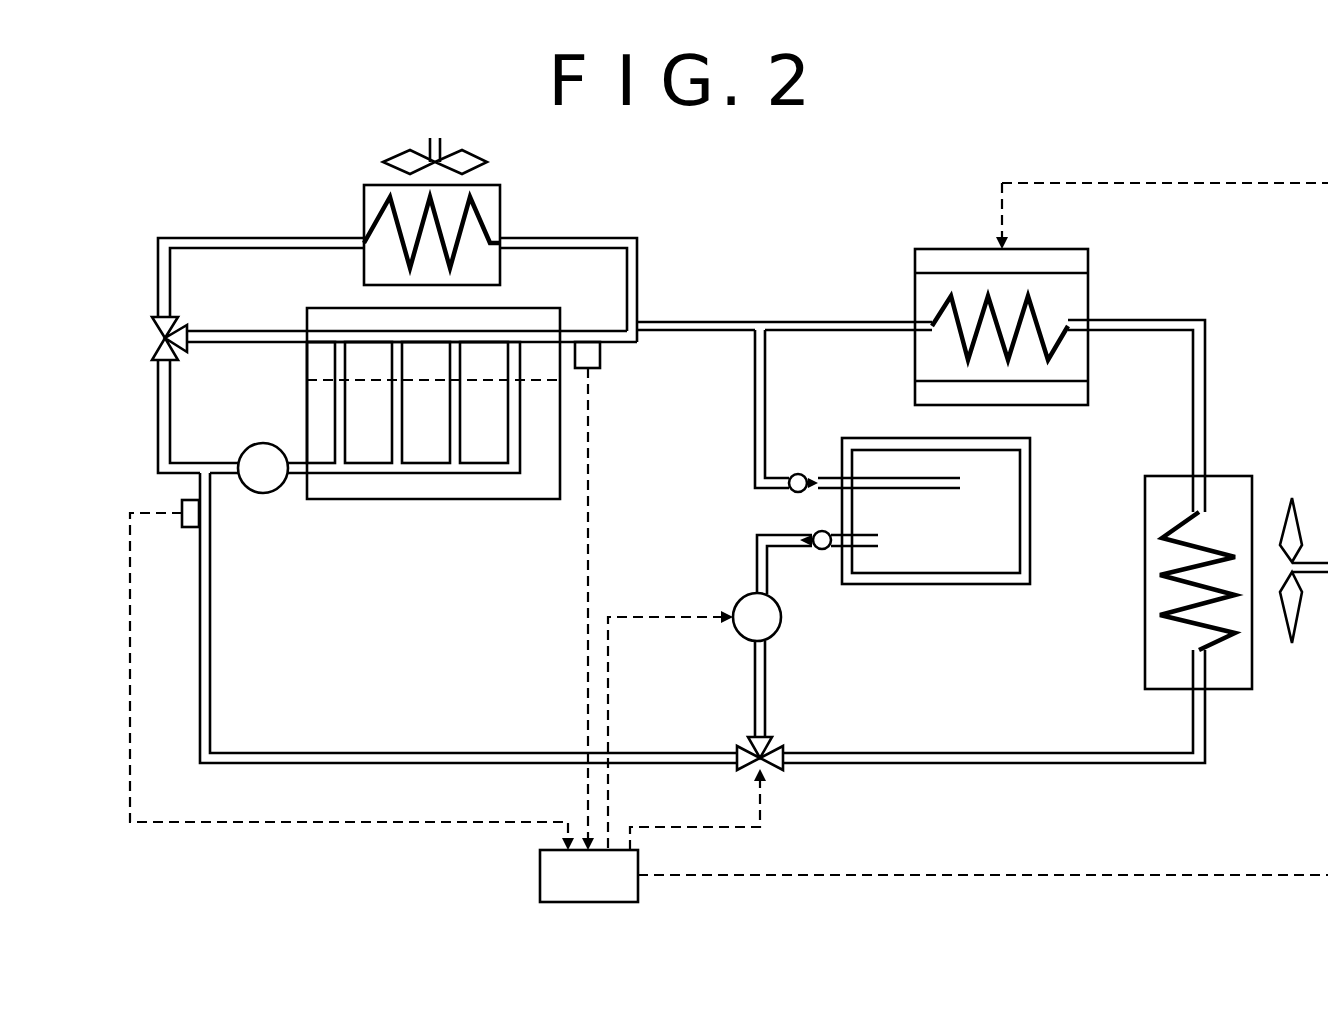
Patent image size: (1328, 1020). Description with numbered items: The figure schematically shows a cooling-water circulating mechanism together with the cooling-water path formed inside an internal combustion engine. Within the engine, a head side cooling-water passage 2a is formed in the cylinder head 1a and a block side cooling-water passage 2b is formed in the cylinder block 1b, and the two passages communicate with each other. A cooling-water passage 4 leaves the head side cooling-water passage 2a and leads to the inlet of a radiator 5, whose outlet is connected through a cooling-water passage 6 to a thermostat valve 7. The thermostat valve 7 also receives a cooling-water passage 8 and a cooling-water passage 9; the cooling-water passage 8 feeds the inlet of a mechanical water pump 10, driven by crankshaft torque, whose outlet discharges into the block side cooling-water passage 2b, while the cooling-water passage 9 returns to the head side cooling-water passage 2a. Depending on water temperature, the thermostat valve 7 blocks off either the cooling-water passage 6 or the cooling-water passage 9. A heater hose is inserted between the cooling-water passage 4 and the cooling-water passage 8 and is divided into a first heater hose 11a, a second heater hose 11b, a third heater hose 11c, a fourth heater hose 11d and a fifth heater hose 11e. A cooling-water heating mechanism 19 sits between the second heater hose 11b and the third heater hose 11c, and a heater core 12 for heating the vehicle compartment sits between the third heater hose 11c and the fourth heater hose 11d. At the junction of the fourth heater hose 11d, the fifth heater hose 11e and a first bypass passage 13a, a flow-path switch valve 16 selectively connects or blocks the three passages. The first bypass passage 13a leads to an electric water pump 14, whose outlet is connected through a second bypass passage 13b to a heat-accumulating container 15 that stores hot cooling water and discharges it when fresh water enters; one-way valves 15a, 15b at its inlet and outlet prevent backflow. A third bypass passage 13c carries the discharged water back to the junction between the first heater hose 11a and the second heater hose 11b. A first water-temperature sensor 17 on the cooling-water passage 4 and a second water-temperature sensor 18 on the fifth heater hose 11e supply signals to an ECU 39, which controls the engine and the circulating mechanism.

The cylinder head 1a is at (322, 307).
The cylinder block 1b is at (523, 500).
The head side cooling-water passage 2a is at (485, 338).
The block side cooling-water passage 2b is at (427, 474).
The cooling-water passage 4 is at (565, 236).
The radiator 5 is at (362, 212).
The cooling-water passage 6 is at (200, 238).
The thermostat valve 7 is at (158, 330).
The cooling-water passage 8 is at (158, 415).
The cooling-water passage 9 is at (235, 343).
The mechanical water pump 10 is at (265, 493).
The first heater hose 11a is at (703, 321).
The second heater hose 11b is at (832, 320).
The third heater hose 11c is at (1157, 320).
The fourth heater hose 11d is at (1130, 765).
The fifth heater hose 11e is at (658, 766).
The heater core 12 is at (1230, 476).
The first bypass passage 13a is at (766, 700).
The second bypass passage 13b is at (757, 565).
The third bypass passage 13c is at (755, 435).
The electric water pump 14 is at (740, 602).
The heat-accumulating container 15 is at (1032, 478).
The one-way valve 15a is at (799, 473).
The one-way valve 15b is at (818, 550).
The flow-path switch valve 16 is at (770, 768).
The first water-temperature sensor 17 is at (600, 355).
The second water-temperature sensor 18 is at (182, 507).
The cooling-water heating mechanism 19 is at (1052, 249).
The ECU 39 is at (540, 878).